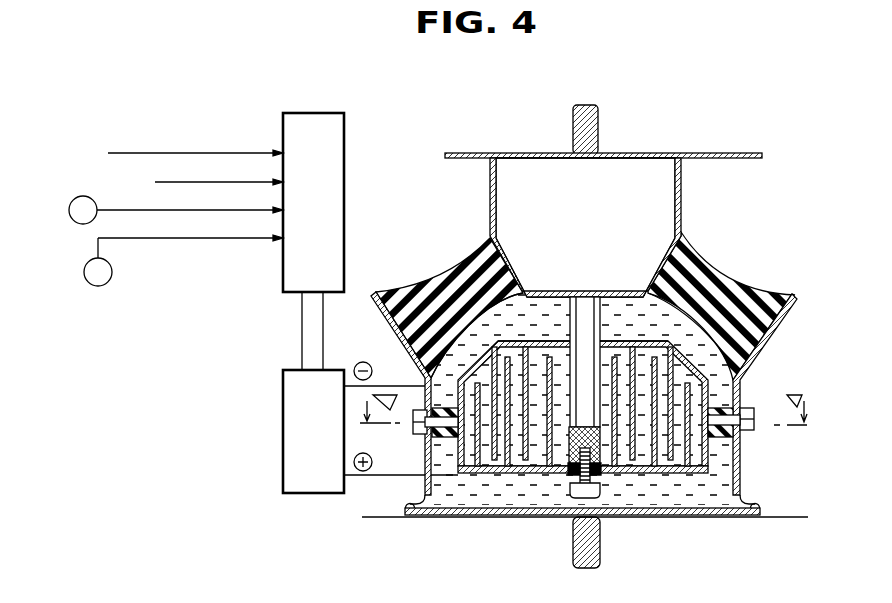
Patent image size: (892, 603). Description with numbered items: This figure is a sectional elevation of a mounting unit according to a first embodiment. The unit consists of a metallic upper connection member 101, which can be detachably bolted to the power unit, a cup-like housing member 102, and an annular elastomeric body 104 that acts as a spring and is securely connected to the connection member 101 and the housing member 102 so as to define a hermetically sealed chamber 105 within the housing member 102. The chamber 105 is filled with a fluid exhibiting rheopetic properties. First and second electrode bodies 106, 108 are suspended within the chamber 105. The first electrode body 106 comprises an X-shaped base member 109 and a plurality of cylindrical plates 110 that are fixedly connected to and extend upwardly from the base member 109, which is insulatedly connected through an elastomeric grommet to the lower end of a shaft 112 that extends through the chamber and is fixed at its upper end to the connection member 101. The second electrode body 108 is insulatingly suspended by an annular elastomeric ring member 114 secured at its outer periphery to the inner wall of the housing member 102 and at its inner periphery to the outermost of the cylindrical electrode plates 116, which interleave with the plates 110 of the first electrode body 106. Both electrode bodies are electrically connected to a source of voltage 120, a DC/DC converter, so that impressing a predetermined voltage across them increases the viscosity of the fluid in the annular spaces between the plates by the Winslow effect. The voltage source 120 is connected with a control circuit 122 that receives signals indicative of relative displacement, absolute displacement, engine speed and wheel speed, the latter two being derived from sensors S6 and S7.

The upper connection member 101 is at (490, 196).
The housing member 102 is at (742, 392).
The annular elastomeric body 104 is at (702, 256).
The chamber 105 is at (532, 297).
The first electrode body 106 is at (674, 481).
The second electrode body 108 is at (630, 334).
The X-shaped base member 109 is at (623, 478).
The cylindrical plates 110 is at (550, 443).
The shaft 112 is at (581, 308).
The annular elastomeric ring member 114 is at (741, 442).
The cylindrical electrode plates 116 is at (495, 447).
The source of voltage 120 is at (283, 470).
The control circuit 122 is at (345, 236).
The sensor S6 is at (83, 196).
The sensor S7 is at (109, 281).